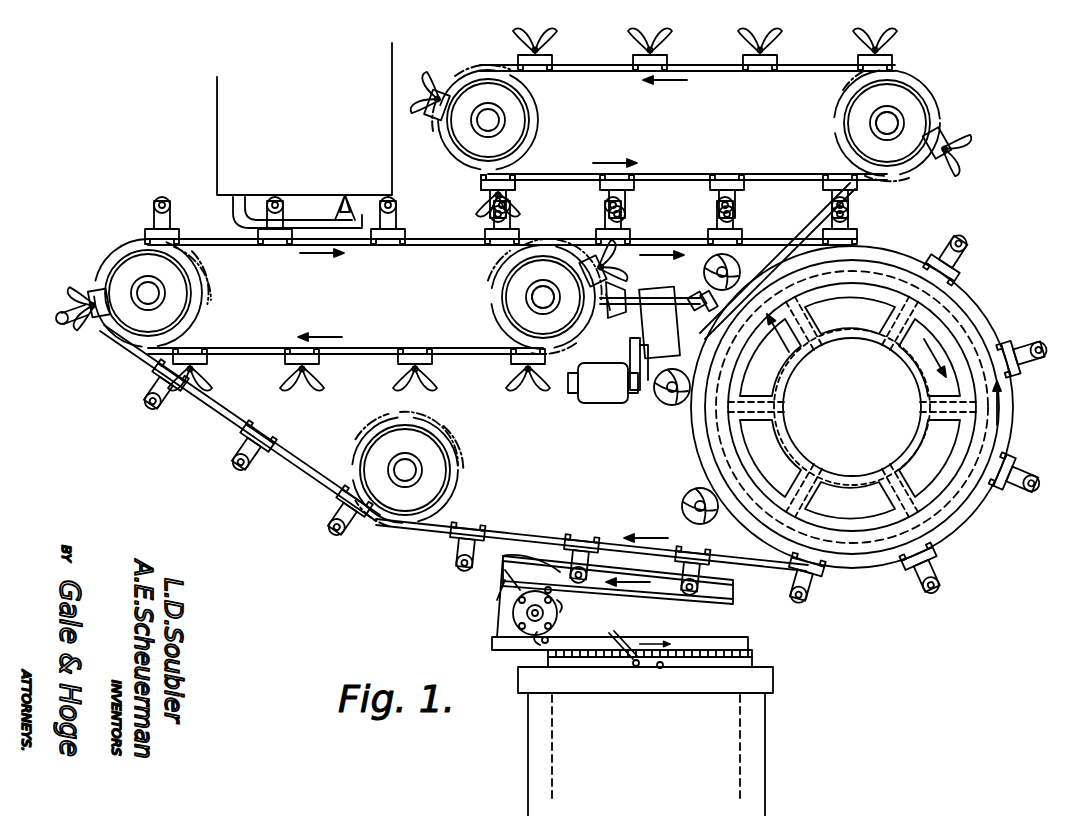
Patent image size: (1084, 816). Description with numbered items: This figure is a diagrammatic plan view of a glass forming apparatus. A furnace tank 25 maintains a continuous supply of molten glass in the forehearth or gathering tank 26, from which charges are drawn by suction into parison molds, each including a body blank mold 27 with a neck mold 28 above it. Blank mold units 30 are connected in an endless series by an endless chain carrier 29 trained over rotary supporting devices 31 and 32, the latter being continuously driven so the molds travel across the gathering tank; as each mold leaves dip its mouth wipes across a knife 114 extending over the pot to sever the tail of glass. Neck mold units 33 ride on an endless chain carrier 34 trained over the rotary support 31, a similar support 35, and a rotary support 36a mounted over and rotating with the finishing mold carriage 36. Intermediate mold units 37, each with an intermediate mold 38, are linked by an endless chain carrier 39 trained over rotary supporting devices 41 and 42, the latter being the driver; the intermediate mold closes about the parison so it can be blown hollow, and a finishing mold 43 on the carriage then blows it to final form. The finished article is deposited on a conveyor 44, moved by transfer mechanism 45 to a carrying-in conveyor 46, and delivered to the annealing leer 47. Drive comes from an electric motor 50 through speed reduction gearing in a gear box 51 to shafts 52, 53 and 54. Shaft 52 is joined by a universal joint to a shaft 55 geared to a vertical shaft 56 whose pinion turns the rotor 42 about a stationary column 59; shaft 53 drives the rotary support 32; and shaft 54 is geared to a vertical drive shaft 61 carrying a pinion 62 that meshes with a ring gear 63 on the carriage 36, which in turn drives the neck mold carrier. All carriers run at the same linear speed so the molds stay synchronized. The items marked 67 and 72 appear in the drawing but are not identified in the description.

The furnace tank 25 is at (217, 137).
The gathering tank 26 is at (240, 204).
The knife 114 is at (351, 193).
The body blank mold 27 is at (325, 372).
The neck mold 28 is at (155, 206).
The endless chain carrier 29 is at (250, 348).
The blank mold unit 30 is at (408, 239).
The rotary supporting device 31 is at (212, 306).
The rotary supporting device 32 is at (507, 307).
The neck mold unit 33 is at (272, 452).
The endless chain carrier 34 is at (228, 418).
The rotary support 35 is at (466, 459).
The finishing mold carriage 36 is at (858, 407).
The rotary support 36a is at (881, 407).
The intermediate mold unit 37 is at (686, 124).
The intermediate mold 38 is at (760, 70).
The endless chain carrier 39 is at (590, 72).
The rotary supporting device 41 is at (528, 136).
The rotary supporting device 42 is at (879, 132).
The finishing mold 43 is at (712, 268).
The conveyor 44 is at (680, 590).
The transfer mechanism 45 is at (567, 617).
The carrying-in conveyor 46 is at (675, 640).
The annealing leer 47 is at (765, 718).
The electric motor 50 is at (607, 393).
The gear box 51 is at (645, 325).
The shaft 52 is at (690, 298).
The shaft 53 is at (638, 300).
The shaft 54 is at (693, 338).
The shaft 55 is at (800, 228).
The vertical shaft 56 is at (946, 160).
The stationary column 59 is at (887, 112).
The vertical drive shaft 61 is at (852, 407).
The pinion 62 is at (850, 419).
The ring gear 63 is at (850, 307).
The lower conveyor run 67 is at (600, 526).
The sprocket guard segments 72 is at (185, 277).